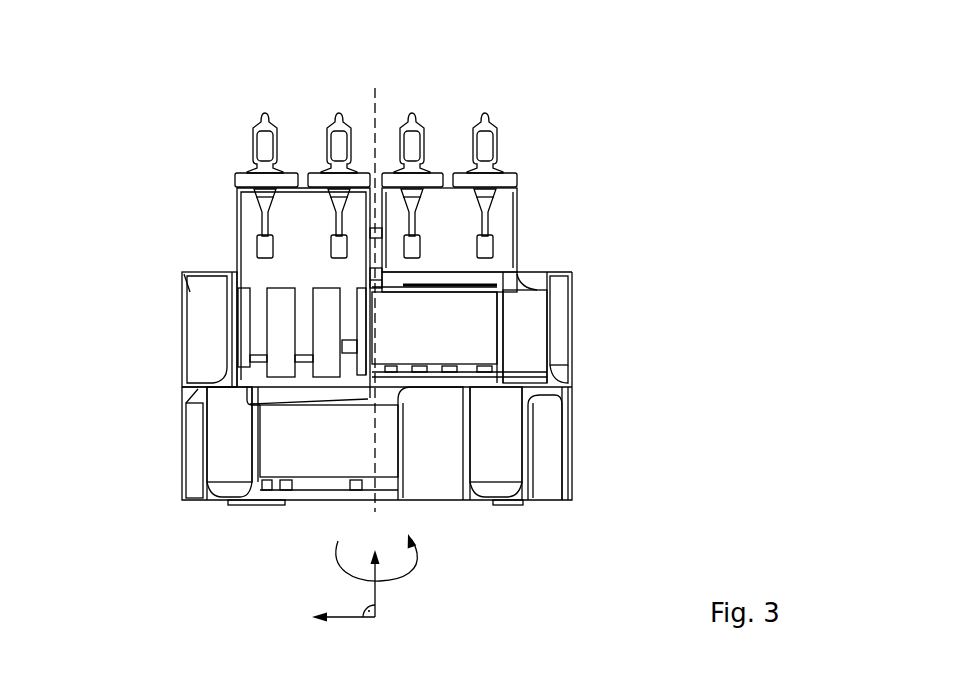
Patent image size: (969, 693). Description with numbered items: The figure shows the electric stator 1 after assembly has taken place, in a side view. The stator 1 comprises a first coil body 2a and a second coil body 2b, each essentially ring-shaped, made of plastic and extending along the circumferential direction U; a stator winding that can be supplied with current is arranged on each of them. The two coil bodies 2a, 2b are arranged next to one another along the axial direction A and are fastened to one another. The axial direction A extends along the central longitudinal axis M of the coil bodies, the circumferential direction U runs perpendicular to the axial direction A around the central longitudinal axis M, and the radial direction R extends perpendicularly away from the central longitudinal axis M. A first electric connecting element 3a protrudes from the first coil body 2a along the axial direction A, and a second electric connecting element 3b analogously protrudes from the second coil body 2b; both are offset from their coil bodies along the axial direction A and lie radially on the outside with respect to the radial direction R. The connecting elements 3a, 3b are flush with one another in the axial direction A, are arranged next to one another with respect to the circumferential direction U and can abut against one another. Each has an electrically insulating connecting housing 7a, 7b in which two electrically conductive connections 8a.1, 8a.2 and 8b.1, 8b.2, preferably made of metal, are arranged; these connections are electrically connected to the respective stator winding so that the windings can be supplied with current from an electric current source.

The electric stator 1 is at (688, 151).
The first coil body 2a is at (152, 445).
The second coil body 2b is at (152, 318).
The first electric connecting element 3a is at (210, 223).
The second electric connecting element 3b is at (540, 226).
The first electrically insulating connecting housing 7a is at (245, 203).
The second electrically insulating connecting housing 7b is at (505, 205).
The electrically conductive connection 8a.1 is at (264, 111).
The electrically conductive connection 8a.2 is at (338, 111).
The electrically conductive connection 8b.1 is at (411, 111).
The electrically conductive connection 8b.2 is at (484, 111).
The central longitudinal axis M is at (377, 512).
The circumferential direction U is at (419, 561).
The radial direction R is at (352, 616).
The axial direction A is at (380, 590).